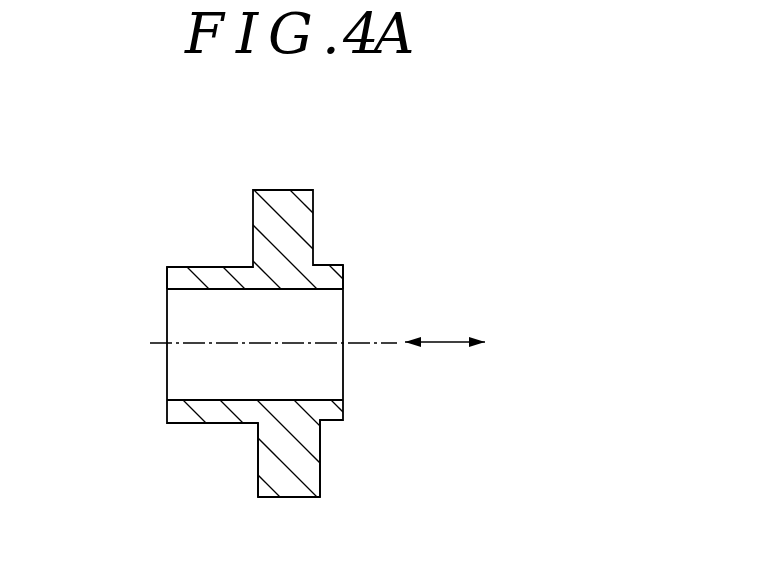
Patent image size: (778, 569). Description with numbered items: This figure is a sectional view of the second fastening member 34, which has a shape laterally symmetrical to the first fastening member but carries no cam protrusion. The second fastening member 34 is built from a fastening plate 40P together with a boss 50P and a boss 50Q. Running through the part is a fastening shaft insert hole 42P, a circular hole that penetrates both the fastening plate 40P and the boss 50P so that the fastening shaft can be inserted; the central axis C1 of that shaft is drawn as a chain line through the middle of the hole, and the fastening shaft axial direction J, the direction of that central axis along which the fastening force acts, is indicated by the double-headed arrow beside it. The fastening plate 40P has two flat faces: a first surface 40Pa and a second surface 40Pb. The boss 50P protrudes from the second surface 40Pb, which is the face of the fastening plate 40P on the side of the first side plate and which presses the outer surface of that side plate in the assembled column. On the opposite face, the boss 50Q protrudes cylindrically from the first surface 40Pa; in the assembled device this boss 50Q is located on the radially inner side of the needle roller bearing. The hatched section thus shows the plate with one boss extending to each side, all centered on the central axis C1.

The fastening plate 40P is at (310, 320).
The second fastening member 34 is at (296, 186).
The boss 50Q is at (342, 265).
The boss 50P is at (160, 272).
The fastening shaft insert hole 42P is at (181, 289).
The central axis C1 is at (376, 343).
The fastening shaft axial direction J is at (447, 342).
The second surface 40Pb is at (258, 482).
The first surface 40Pa is at (320, 483).